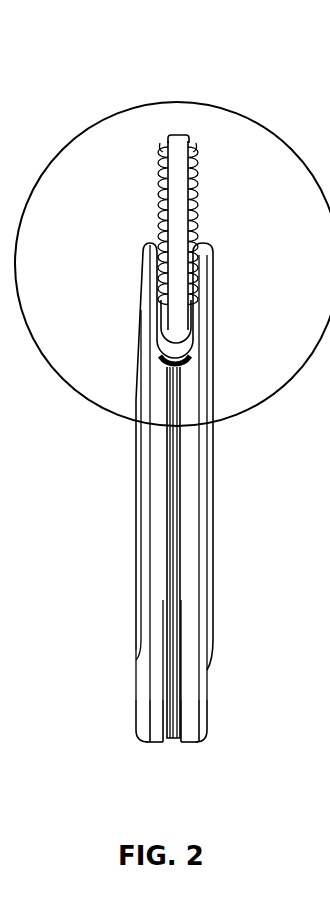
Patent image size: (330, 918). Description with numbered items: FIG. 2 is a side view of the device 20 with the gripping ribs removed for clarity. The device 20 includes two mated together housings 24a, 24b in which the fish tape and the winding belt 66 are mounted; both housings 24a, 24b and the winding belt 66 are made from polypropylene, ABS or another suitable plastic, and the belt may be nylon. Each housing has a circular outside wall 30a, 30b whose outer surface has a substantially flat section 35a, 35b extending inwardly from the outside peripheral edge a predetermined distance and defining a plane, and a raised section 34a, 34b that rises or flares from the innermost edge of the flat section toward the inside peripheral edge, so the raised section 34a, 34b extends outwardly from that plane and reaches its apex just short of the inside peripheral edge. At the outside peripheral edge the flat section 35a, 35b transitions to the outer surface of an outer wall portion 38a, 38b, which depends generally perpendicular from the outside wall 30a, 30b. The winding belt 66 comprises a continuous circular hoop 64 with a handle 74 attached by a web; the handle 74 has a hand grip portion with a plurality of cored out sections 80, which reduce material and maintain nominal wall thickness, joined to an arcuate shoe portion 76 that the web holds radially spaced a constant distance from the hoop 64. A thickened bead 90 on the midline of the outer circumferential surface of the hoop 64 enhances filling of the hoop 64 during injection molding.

The device 20 is at (197, 121).
The housing 24a is at (207, 693).
The housing 24b is at (137, 682).
The circular outside wall 30a is at (207, 720).
The circular outside wall 30b is at (137, 707).
The raised section 34a is at (213, 467).
The raised section 34b is at (135, 457).
The flat section 35a is at (213, 308).
The flat section 35b is at (143, 312).
The outer wall portion 38a is at (190, 743).
The outer wall portion 38b is at (152, 743).
The continuous circular hoop 64 is at (165, 552).
The winding belt 66 is at (182, 211).
The handle 74 is at (172, 133).
The arcuate shoe portion 76 is at (190, 343).
The cored out sections 80 is at (160, 187).
The thickened bead 90 is at (168, 580).